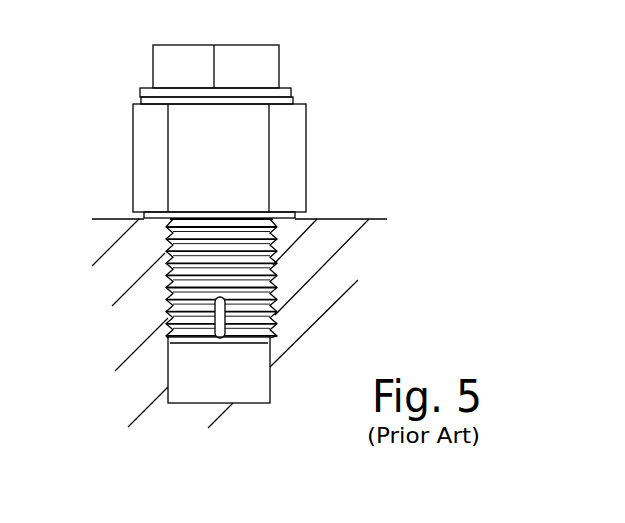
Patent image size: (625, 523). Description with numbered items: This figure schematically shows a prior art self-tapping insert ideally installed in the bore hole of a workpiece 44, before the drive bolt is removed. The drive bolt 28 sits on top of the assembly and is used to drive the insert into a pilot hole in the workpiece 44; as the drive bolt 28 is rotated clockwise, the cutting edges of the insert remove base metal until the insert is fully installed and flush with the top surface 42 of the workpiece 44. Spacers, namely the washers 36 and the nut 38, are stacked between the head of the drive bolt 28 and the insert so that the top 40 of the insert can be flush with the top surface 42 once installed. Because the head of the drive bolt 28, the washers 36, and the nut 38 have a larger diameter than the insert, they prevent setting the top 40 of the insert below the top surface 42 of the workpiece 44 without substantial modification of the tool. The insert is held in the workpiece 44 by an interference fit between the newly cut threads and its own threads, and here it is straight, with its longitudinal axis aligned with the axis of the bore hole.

The drive bolt 28 is at (227, 45).
The washers 36 is at (140, 100).
The nut 38 is at (137, 164).
The top of the insert 40 is at (255, 221).
The top surface of the workpiece 42 is at (355, 218).
The workpiece 44 is at (298, 316).